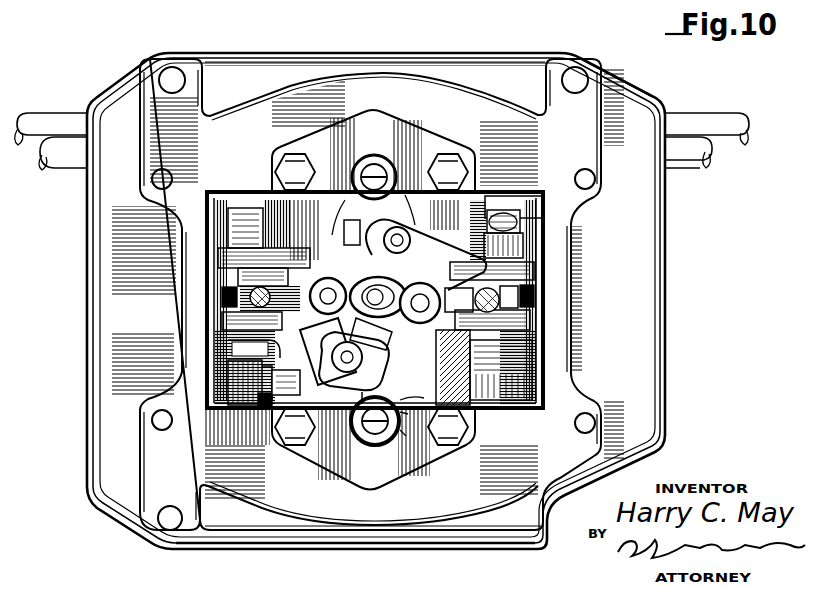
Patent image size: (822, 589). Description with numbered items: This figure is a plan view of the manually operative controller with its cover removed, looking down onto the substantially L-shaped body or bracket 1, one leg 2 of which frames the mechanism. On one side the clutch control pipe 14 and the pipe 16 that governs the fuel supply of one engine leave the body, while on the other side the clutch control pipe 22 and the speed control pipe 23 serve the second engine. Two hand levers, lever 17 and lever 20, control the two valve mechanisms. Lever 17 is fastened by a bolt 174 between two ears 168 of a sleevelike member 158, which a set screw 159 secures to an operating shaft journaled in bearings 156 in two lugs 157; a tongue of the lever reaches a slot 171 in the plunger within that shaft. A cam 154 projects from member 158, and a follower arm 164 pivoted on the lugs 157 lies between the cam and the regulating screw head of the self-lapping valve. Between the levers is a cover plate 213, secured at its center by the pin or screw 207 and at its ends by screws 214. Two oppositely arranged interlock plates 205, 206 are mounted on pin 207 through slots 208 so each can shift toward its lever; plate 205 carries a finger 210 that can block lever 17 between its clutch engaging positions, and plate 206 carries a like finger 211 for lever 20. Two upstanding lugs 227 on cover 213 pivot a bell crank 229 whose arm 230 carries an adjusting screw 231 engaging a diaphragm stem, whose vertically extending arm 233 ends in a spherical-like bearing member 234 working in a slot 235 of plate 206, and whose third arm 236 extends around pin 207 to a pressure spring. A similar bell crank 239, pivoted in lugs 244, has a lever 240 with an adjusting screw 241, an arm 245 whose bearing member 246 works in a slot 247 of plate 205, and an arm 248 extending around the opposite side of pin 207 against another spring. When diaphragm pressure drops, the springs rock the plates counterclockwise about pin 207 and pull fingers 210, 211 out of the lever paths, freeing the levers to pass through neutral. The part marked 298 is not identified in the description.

The body 1 is at (667, 265).
The body leg 2 is at (115, 520).
The clutch control pipe 14 is at (50, 117).
The pipe 16 is at (66, 165).
The clutch control pipe 22 is at (727, 119).
The speed control pipe 23 is at (698, 165).
The manually operative lever 17 is at (250, 300).
The lever 20 is at (545, 288).
The cam 154 is at (229, 224).
The bearings 156 is at (545, 252).
The lugs 157 is at (263, 408).
The sleevelike member 158 is at (545, 347).
The set screw 159 is at (228, 366).
The follower arm 164 is at (507, 410).
The ears 168 is at (217, 260).
The slot 171 is at (220, 287).
The bolt 174 is at (258, 255).
The plate 205 is at (277, 398).
The plate 206 is at (440, 232).
The pin 207 is at (378, 285).
The slot 208 is at (420, 288).
The finger 210 is at (222, 323).
The finger 211 is at (545, 270).
The cover plate 213 is at (431, 147).
The screws 214 is at (276, 162).
The lugs 227 is at (362, 232).
The bell crank 229 is at (338, 208).
The arm 230 is at (371, 158).
The adjusting screw 231 is at (380, 163).
The arm 233 is at (426, 242).
The bearing member 234 is at (422, 202).
The slot 235 is at (487, 238).
The arm 236 is at (492, 265).
The bell crank 239 is at (418, 402).
The lever 240 is at (417, 440).
The adjusting screw 241 is at (384, 436).
The lugs 244 is at (419, 421).
The arm 245 is at (328, 351).
The bearing member 246 is at (354, 380).
The slot 247 is at (344, 395).
The arm 248 is at (313, 312).
The link 298 is at (371, 334).